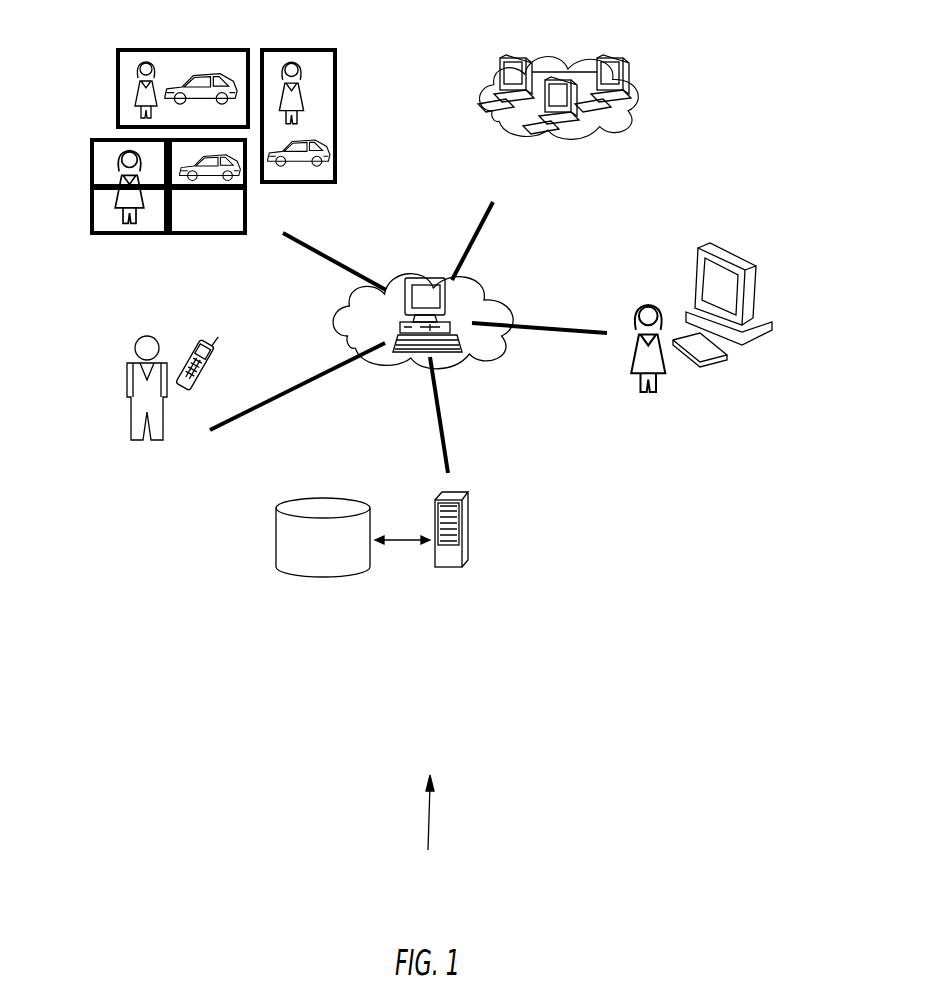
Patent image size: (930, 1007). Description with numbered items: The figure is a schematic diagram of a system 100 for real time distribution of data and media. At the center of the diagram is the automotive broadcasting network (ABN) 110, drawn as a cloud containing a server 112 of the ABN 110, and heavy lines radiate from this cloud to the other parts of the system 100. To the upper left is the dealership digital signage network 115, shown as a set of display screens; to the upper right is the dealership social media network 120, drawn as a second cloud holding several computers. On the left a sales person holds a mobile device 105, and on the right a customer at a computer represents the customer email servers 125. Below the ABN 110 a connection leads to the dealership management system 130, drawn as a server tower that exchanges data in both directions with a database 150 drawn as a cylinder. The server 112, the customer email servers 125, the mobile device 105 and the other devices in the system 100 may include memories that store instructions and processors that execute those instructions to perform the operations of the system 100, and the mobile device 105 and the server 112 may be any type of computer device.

The system 100 is at (427, 828).
The mobile device 105 is at (192, 350).
The automotive broadcasting network 110 is at (395, 363).
The server 112 is at (425, 278).
The dealership digital signage network 115 is at (117, 88).
The dealership social media network 120 is at (647, 91).
The customer email servers 125 is at (756, 299).
The dealership management system 130 is at (468, 540).
The database 150 is at (290, 575).